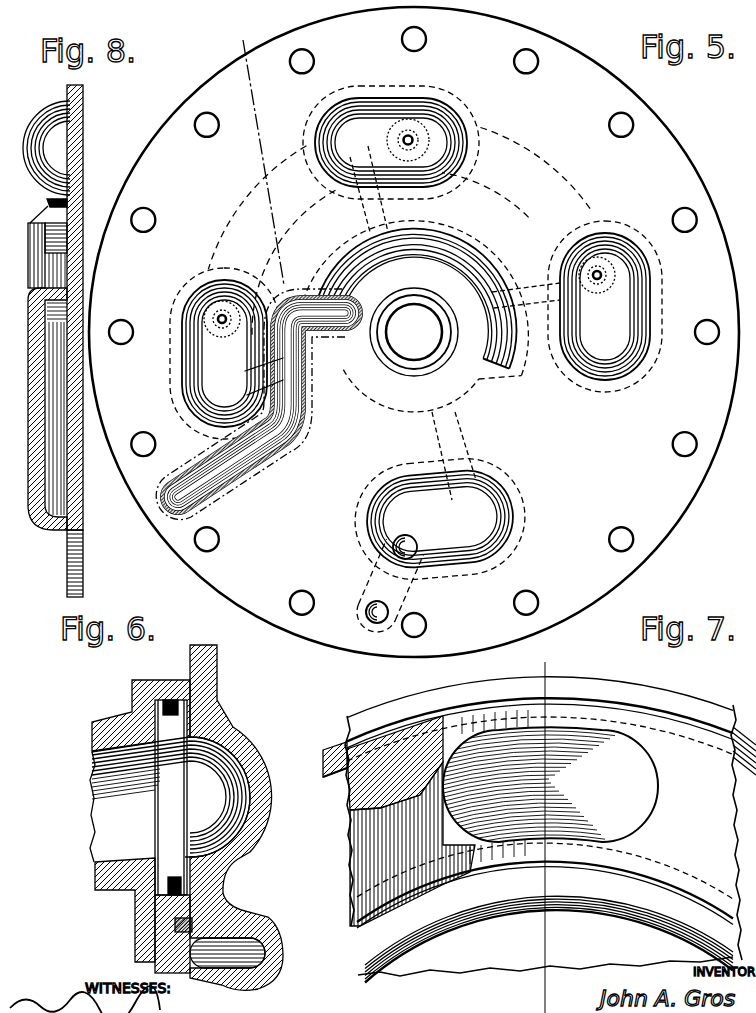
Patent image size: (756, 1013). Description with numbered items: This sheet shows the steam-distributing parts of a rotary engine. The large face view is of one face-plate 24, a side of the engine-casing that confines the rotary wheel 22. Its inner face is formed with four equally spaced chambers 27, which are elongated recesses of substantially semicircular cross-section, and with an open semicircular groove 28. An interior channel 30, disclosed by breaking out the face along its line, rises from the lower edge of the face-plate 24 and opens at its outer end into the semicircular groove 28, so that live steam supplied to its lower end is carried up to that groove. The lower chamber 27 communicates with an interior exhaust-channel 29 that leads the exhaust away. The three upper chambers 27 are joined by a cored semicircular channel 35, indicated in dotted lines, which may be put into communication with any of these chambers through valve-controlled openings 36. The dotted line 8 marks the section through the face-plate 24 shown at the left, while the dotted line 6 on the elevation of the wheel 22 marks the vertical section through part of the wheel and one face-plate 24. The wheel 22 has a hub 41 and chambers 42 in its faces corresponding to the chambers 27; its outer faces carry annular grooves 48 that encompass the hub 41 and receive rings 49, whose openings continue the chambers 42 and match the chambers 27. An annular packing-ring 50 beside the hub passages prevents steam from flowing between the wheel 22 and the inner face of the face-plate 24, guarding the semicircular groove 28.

In FIG. 7, the section line 6 6 is at (545, 830).
In FIG. 5, the section line 8 8 is at (125, 548).
In FIG. 6, the rotary wheel 22 is at (133, 721).
In FIG. 7, the rotary wheel 22 is at (354, 718).
In FIG. 5, the face-plate 24 is at (673, 508).
In FIG. 8, the face-plate 24 is at (62, 341).
In FIG. 6, the face-plate 24 is at (236, 817).
In FIG. 5, the chamber 27 is at (322, 122).
In FIG. 8, the chamber 27 is at (46, 162).
In FIG. 6, the chamber 27 is at (171, 797).
In FIG. 5, the semicircular groove 28 is at (498, 373).
In FIG. 6, the semicircular groove 28 is at (256, 927).
In FIG. 5, the exhaust-channel 29 is at (360, 609).
In FIG. 5, the channel 30 is at (292, 469).
In FIG. 8, the channel 30 is at (62, 478).
In FIG. 5, the semicircular channel 35 is at (534, 156).
In FIG. 5, the opening 36 is at (222, 330).
In FIG. 7, the hub 41 is at (515, 933).
In FIG. 6, the chamber 42 is at (119, 833).
In FIG. 7, the chamber 42 is at (549, 789).
In FIG. 7, the annular groove 48 is at (702, 712).
In FIG. 6, the ring 49 is at (142, 836).
In FIG. 7, the ring 49 is at (689, 840).
In FIG. 6, the annular packing-ring 50 is at (194, 914).
In FIG. 7, the annular packing-ring 50 is at (453, 947).